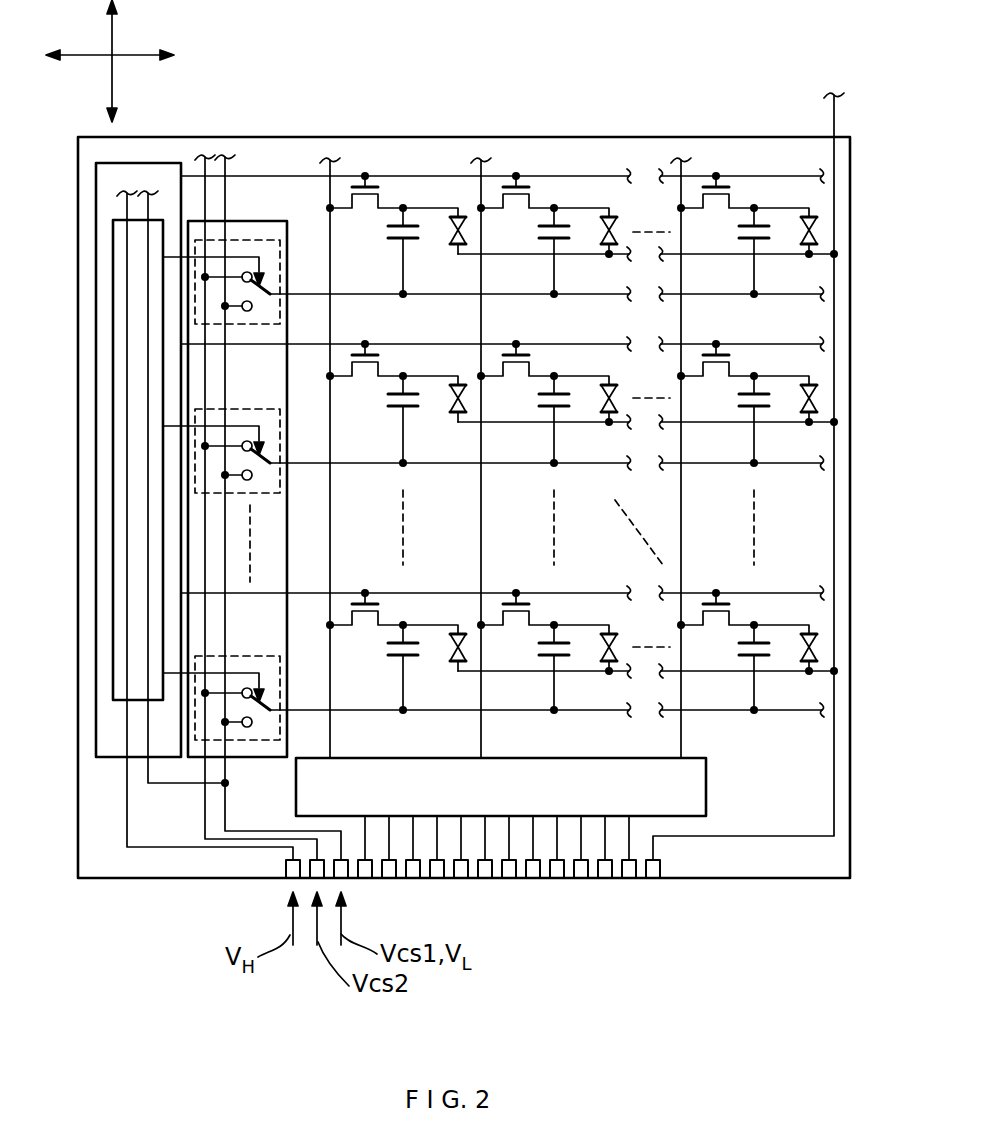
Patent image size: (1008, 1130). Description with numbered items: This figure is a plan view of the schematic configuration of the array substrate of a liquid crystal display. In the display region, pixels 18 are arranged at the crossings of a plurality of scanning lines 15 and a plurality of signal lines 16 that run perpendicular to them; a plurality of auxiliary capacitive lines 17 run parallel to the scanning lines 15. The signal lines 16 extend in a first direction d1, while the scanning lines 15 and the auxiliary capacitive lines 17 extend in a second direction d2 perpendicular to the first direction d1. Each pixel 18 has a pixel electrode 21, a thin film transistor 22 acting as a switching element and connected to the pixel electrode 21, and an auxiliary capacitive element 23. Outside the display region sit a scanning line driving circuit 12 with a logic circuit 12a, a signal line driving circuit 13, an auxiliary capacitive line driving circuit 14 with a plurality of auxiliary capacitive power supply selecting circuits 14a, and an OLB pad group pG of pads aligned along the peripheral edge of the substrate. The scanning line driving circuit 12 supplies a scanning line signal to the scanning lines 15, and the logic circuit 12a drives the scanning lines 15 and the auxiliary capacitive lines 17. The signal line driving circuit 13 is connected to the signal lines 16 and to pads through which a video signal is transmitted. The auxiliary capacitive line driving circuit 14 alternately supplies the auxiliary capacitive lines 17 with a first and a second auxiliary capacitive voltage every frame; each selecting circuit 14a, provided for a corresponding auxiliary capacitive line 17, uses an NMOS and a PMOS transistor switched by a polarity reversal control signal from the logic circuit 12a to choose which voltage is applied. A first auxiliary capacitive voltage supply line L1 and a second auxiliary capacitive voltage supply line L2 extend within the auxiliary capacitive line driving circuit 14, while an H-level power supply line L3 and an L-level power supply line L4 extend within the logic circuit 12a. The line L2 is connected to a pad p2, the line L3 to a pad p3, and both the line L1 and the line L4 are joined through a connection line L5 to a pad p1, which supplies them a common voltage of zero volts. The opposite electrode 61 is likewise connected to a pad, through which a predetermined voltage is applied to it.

The scanning line driving circuit 12 is at (96, 226).
The logic circuit 12a is at (113, 312).
The signal line driving circuit 13 is at (296, 790).
The auxiliary capacitive line driving circuit 14 is at (284, 220).
The auxiliary capacitive power supply selecting circuit 14a is at (257, 240).
The scanning line 15 is at (798, 178).
The signal line 16 is at (330, 740).
The auxiliary capacitive line 17 is at (798, 296).
The pixel 18 is at (397, 200).
The pixel electrode 21 is at (452, 210).
The thin film transistor 22 is at (383, 193).
The auxiliary capacitive element 23 is at (392, 244).
The opposite electrode 61 is at (834, 110).
The first auxiliary capacitive voltage supply line L1 is at (225, 520).
The second auxiliary capacitive voltage supply line L2 is at (205, 562).
The H-level power supply line L3 is at (127, 608).
The L-level power supply line L4 is at (148, 648).
The connection line L5 is at (225, 810).
The pad p1 is at (348, 872).
The pad p2 is at (311, 872).
The pad p3 is at (287, 870).
The OLB pad group pG is at (661, 898).
The first direction d1 is at (113, 24).
The second direction d2 is at (82, 56).